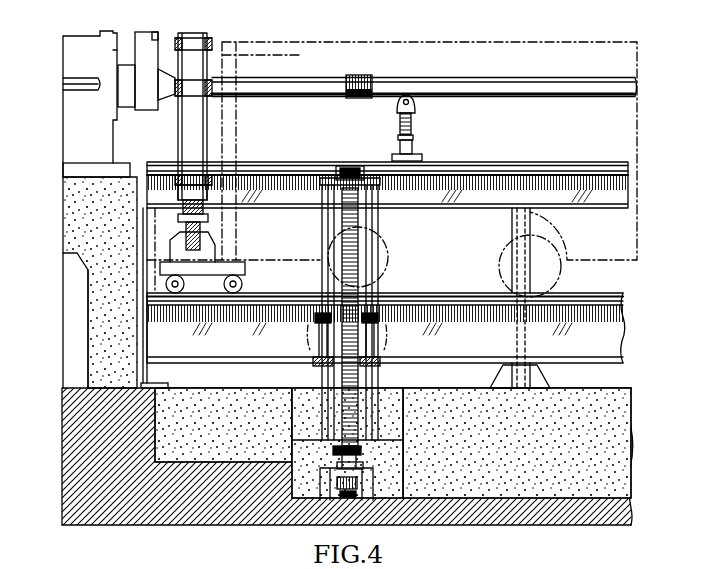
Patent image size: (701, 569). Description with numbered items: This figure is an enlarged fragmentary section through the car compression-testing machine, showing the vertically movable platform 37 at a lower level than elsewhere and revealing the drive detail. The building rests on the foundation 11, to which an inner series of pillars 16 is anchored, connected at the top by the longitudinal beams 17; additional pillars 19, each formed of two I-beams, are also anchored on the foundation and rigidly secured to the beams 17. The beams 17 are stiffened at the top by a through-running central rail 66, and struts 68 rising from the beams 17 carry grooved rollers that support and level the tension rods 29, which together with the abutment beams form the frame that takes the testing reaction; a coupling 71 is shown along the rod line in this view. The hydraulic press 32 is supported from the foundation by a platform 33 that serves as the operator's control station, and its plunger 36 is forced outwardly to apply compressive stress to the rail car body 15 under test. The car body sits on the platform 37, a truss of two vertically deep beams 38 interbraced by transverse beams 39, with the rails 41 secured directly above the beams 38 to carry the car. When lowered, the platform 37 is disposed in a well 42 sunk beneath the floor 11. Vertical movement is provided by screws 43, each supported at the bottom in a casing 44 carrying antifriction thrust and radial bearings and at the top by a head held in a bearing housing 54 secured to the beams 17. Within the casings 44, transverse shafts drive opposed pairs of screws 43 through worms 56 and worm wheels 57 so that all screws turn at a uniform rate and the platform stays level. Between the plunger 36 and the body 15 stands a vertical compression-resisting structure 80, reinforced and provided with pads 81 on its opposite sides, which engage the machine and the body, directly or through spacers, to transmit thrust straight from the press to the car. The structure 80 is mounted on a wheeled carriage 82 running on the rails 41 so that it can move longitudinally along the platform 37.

The foundation 11 is at (608, 500).
The rail car body 15 is at (256, 43).
The pillars 16 is at (512, 232).
The longitudinal beams 17 is at (627, 198).
The pillars 19 is at (397, 413).
The tension rods 29 is at (73, 92).
The hydraulic press 32 is at (55, 63).
The platform 33 is at (70, 172).
The plunger 36 is at (148, 68).
The platform 37 is at (595, 386).
The vertically deep beams 38 is at (615, 350).
The transverse beams 39 is at (175, 352).
The rails 41 is at (287, 296).
The well 42 is at (622, 458).
The screws 43 is at (362, 252).
The casing 44 is at (366, 470).
The bearing housing 54 is at (350, 166).
The worms 56 is at (368, 487).
The worm wheels 57 is at (332, 478).
The central rail 66 is at (612, 163).
The struts 68 is at (415, 127).
The shaft coupling 71 is at (366, 76).
The vertical compression-resisting structure 80 is at (181, 136).
The pads 81 is at (176, 46).
The wheeled carriages 82 is at (215, 277).